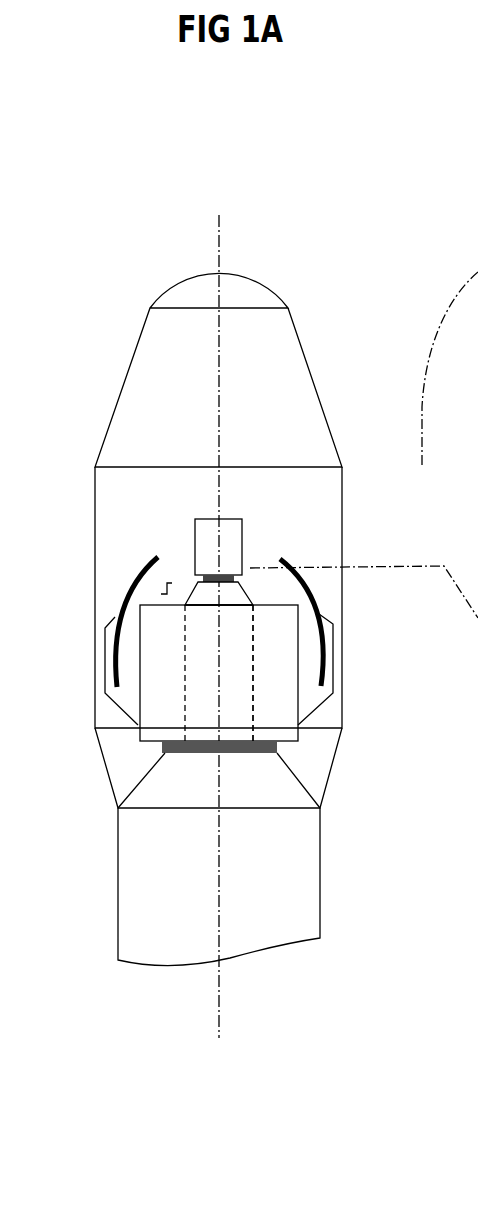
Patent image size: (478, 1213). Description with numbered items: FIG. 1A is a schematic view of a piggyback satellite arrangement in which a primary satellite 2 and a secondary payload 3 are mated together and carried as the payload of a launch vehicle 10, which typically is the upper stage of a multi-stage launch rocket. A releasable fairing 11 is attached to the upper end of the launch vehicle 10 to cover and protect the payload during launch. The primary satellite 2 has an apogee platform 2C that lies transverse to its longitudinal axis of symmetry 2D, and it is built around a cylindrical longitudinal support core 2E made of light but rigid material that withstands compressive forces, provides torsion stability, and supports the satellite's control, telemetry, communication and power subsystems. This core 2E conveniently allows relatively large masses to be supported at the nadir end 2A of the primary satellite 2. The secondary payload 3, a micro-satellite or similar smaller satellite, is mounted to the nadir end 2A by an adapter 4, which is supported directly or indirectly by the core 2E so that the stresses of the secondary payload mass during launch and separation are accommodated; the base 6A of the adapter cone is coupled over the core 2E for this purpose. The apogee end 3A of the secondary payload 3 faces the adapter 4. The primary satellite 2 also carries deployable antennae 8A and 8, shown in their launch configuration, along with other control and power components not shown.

The longitudinal axis of symmetry 2D is at (224, 231).
The releasable fairing 11 is at (318, 363).
The launch vehicle 10 is at (110, 909).
The secondary payload 3 is at (230, 542).
The primary satellite 2 is at (165, 703).
The apogee platform 2C is at (294, 749).
The nadir end 2A is at (270, 599).
The core 2E is at (259, 652).
The base of the cone 6A is at (184, 598).
The adapter 4 is at (155, 586).
The deployable antenna 8A is at (110, 616).
The right fin assembly 8 is at (324, 601).
The apogee end 3A is at (249, 571).